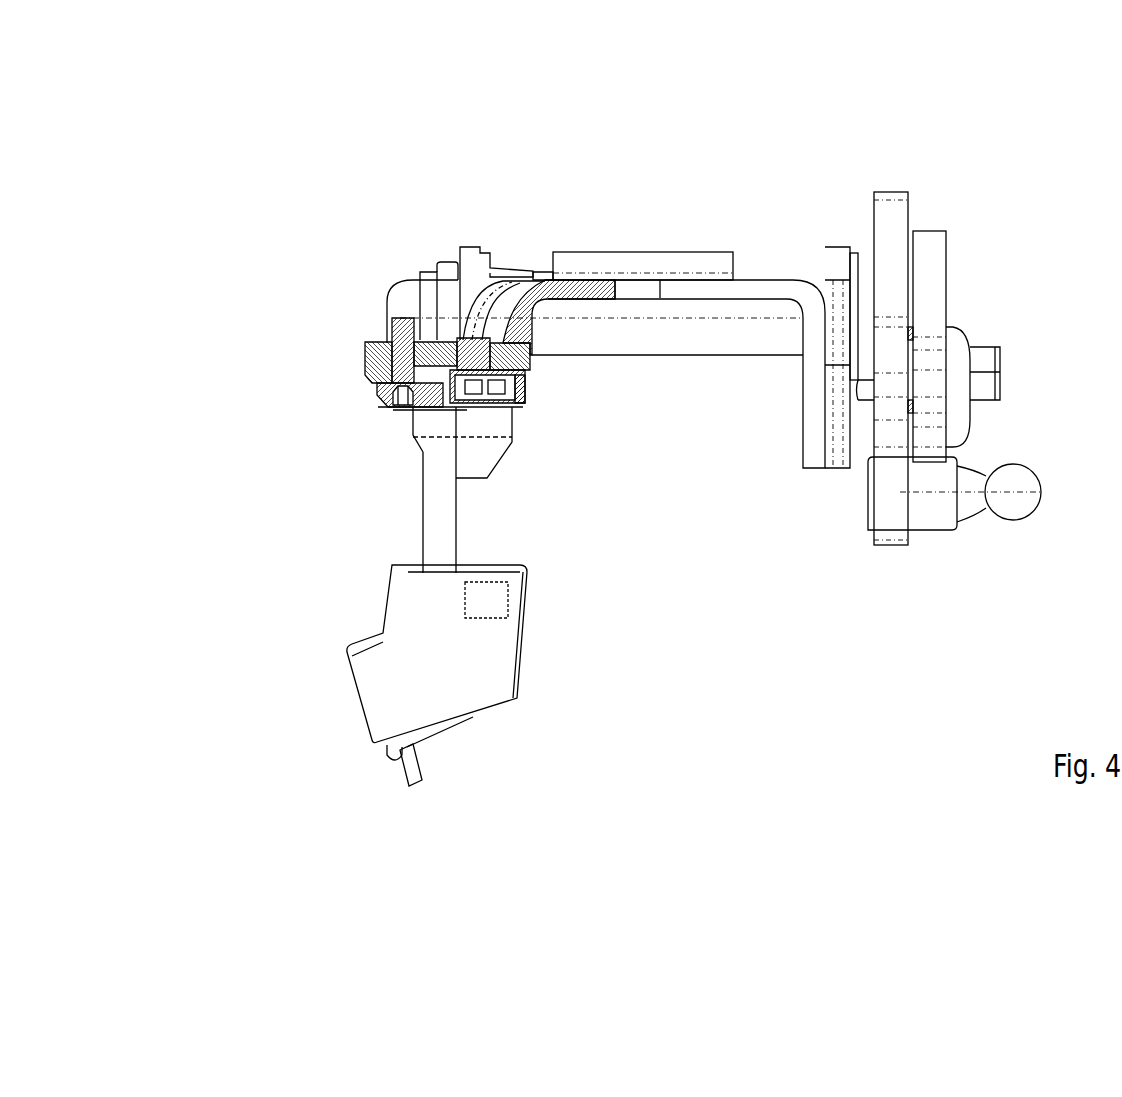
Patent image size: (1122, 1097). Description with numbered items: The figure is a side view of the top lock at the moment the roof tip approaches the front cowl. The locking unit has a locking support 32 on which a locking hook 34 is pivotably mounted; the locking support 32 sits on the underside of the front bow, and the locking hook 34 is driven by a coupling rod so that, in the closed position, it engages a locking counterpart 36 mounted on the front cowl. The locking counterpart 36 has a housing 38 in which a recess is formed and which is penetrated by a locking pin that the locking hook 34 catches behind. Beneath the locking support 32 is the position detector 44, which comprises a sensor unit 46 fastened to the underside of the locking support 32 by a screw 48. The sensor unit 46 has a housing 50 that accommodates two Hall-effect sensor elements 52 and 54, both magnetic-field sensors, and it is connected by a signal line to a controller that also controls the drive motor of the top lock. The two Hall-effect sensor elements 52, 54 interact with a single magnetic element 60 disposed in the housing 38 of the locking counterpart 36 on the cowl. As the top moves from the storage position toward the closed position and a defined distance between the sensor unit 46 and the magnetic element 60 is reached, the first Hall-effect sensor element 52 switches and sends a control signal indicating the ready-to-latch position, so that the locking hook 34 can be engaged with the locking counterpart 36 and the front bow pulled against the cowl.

The locking support 32 is at (533, 298).
The locking hook 34 is at (437, 530).
The locking counterpart 36 is at (365, 705).
The housing 38 is at (493, 680).
The position detector 44 is at (527, 398).
The sensor unit 46 is at (527, 385).
The screw 48 is at (402, 362).
The housing 50 is at (438, 372).
The first Hall-effect sensor element 52 is at (470, 384).
The second Hall-effect sensor element 54 is at (495, 387).
The magnetic element 60 is at (493, 608).